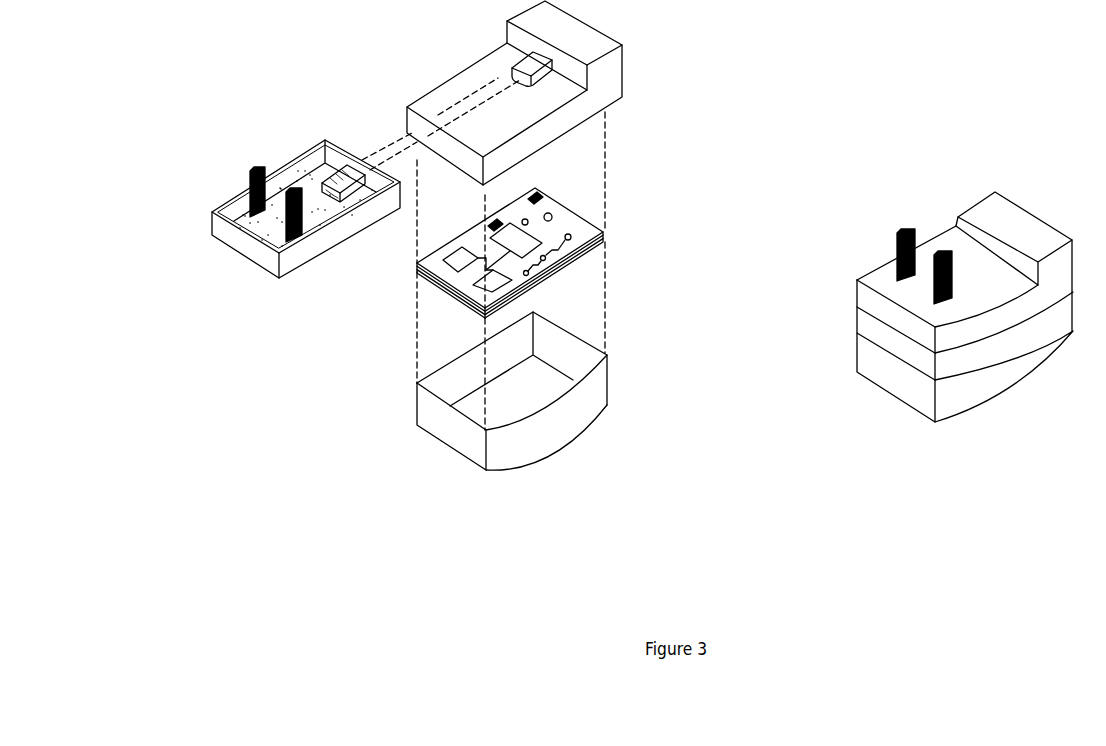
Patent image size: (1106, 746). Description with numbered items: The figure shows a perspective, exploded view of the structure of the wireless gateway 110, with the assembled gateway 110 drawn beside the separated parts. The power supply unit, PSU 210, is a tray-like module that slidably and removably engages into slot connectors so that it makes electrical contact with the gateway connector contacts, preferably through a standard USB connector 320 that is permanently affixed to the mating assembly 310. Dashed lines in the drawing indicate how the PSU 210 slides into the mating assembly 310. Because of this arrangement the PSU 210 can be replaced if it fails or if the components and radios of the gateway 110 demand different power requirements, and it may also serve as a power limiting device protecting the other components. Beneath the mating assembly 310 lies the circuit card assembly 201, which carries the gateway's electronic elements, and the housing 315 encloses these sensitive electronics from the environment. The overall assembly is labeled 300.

The exploded electronic device assembly 300 is at (775, 658).
The mating assembly 310 is at (605, 87).
The USB connector 320 is at (522, 66).
The circuit card assembly 201 is at (605, 238).
The housing 315 is at (609, 374).
The PSU 210 is at (212, 213).
The gateway 110 is at (965, 322).